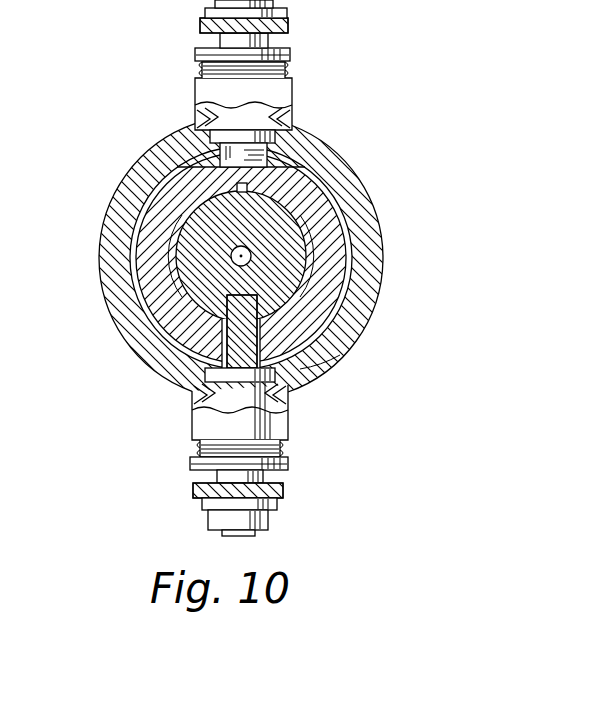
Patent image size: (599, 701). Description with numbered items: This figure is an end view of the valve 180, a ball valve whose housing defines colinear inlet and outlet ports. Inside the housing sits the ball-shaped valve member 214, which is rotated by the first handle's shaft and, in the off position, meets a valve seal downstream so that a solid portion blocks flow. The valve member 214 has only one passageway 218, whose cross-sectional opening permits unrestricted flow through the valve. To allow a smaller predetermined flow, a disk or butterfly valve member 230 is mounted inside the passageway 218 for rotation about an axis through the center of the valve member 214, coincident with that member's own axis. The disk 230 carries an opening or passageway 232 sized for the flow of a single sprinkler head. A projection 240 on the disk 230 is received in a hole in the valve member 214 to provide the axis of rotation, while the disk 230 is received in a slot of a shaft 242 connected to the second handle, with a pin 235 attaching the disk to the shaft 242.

The valve 180 is at (382, 267).
The valve member 214 is at (313, 190).
The passageway 218 is at (307, 227).
The disk or butterfly valve member 230 is at (293, 282).
The opening or passageway 232 is at (229, 262).
The pin 235 is at (240, 308).
The projection 240 is at (178, 232).
The shaft 242 is at (337, 363).